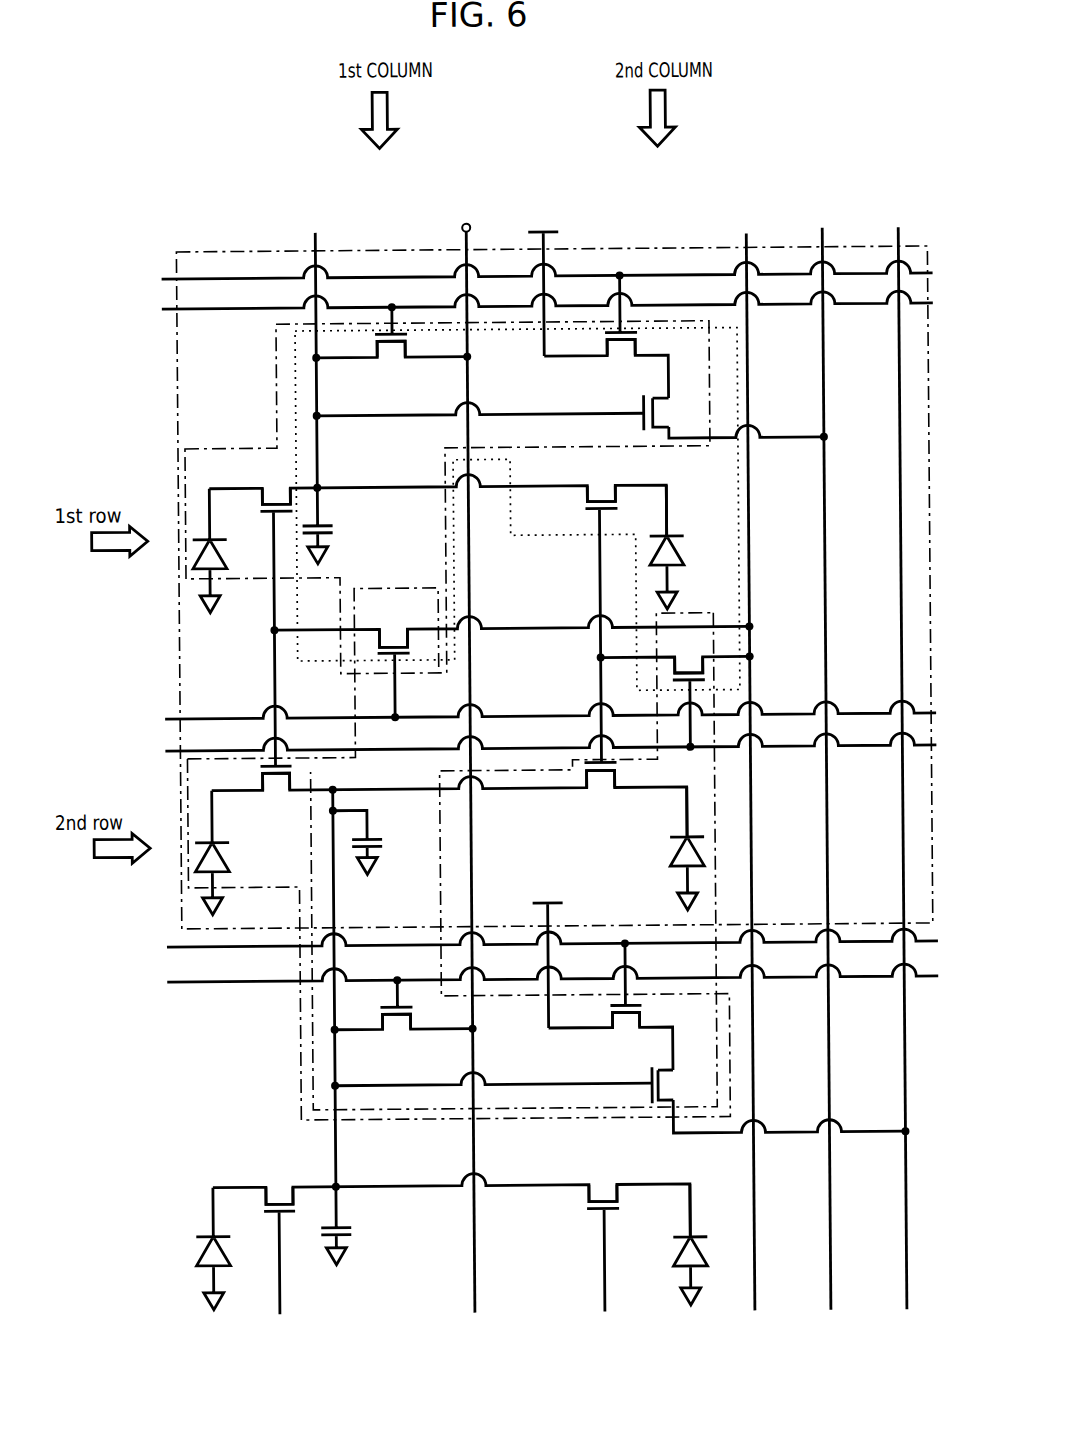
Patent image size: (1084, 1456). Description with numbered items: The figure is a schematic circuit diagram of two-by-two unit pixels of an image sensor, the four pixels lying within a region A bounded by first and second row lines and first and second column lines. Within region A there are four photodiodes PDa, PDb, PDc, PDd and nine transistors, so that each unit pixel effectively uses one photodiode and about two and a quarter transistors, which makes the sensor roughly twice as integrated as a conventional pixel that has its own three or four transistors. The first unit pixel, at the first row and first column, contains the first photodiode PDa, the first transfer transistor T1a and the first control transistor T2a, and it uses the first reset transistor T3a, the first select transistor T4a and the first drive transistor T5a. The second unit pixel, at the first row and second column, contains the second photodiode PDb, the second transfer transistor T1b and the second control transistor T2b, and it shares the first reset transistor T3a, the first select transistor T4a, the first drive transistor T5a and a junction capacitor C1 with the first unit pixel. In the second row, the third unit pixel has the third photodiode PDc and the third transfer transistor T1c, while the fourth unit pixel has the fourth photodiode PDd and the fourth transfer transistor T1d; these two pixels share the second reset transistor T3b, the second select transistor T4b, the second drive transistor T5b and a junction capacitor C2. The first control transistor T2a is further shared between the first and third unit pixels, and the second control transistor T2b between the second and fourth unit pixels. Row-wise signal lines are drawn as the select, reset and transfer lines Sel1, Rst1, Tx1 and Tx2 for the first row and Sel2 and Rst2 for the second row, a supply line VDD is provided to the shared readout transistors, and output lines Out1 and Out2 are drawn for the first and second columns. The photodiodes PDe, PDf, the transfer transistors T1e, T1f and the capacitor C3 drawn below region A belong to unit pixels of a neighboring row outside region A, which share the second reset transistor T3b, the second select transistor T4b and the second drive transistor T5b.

The region A is at (230, 249).
The first transfer transistor T1a is at (276, 615).
The second transfer transistor T1b is at (601, 612).
The third transfer transistor T1c is at (278, 793).
The fourth transfer transistor T1d is at (601, 790).
The transfer transistor T1e is at (280, 1239).
The transfer transistor T1f is at (603, 1236).
The first control transistor T2a is at (393, 661).
The second control transistor T2b is at (688, 690).
The first reset transistor T3a is at (391, 348).
The second reset transistor T3b is at (397, 1021).
The first select transistor T4a is at (621, 331).
The second select transistor T4b is at (627, 1001).
The first drive transistor T5a is at (674, 412).
The second drive transistor T5b is at (680, 1085).
The first photodiode PDa is at (231, 550).
The second photodiode PDb is at (687, 547).
The third photodiode PDc is at (234, 852).
The fourth photodiode PDd is at (711, 848).
The photodiode PDe is at (238, 1248).
The photodiode PDf is at (714, 1244).
The junction capacitor C1 is at (333, 525).
The junction capacitor C2 is at (372, 842).
The capacitor C3 is at (353, 1225).
The first select line Sel1 is at (530, 276).
The first reset line Rst1 is at (530, 304).
The first transfer line Tx1 is at (536, 713).
The second transfer line Tx2 is at (536, 744).
The second select line Sel2 is at (533, 943).
The second reset line Rst2 is at (533, 978).
The first output line Out1 is at (826, 754).
The second output line Out2 is at (903, 753).
The power supply voltage VDD is at (548, 616).